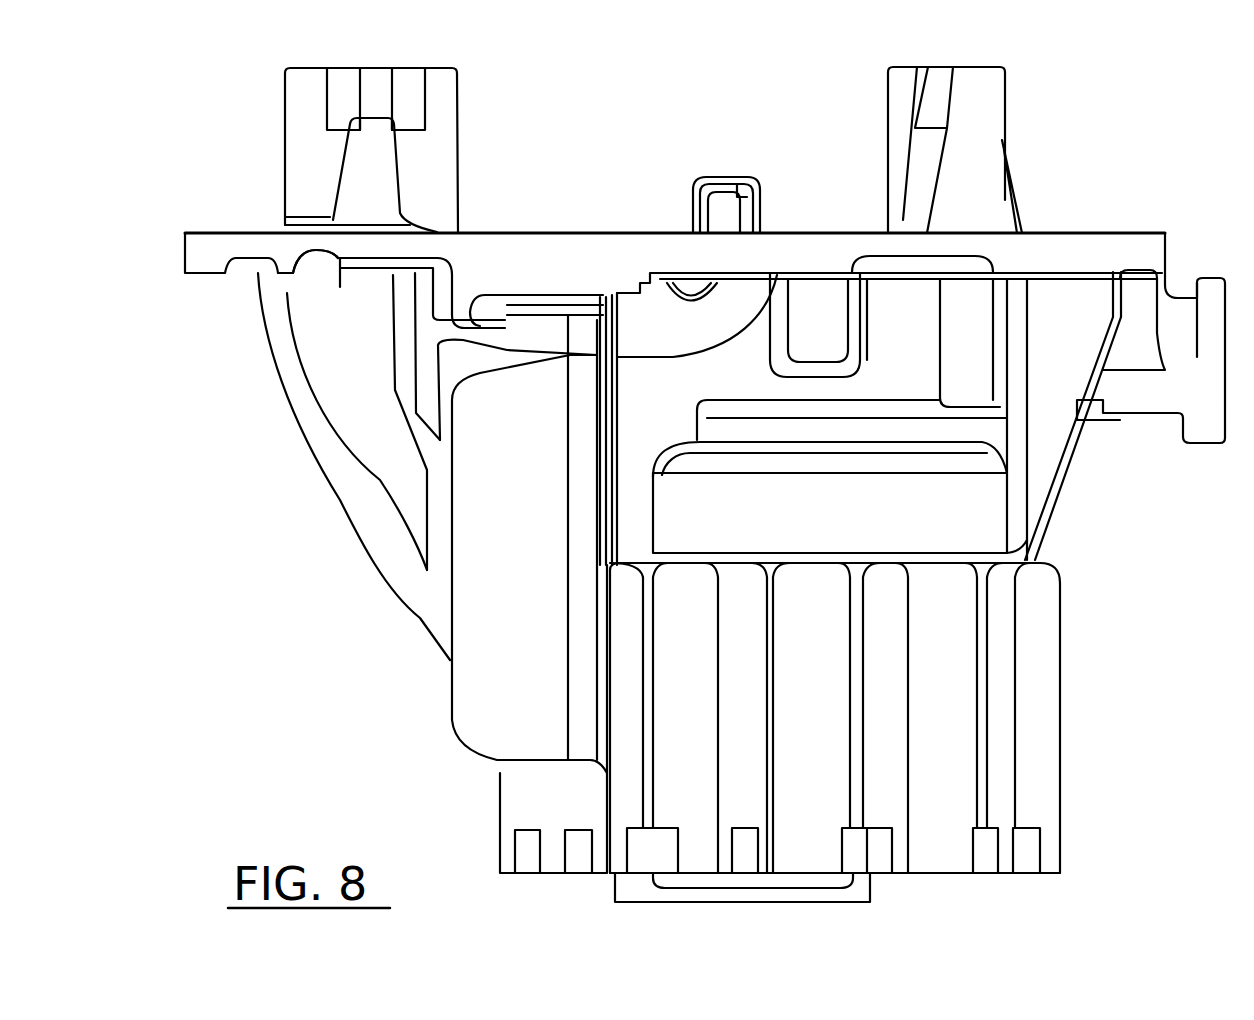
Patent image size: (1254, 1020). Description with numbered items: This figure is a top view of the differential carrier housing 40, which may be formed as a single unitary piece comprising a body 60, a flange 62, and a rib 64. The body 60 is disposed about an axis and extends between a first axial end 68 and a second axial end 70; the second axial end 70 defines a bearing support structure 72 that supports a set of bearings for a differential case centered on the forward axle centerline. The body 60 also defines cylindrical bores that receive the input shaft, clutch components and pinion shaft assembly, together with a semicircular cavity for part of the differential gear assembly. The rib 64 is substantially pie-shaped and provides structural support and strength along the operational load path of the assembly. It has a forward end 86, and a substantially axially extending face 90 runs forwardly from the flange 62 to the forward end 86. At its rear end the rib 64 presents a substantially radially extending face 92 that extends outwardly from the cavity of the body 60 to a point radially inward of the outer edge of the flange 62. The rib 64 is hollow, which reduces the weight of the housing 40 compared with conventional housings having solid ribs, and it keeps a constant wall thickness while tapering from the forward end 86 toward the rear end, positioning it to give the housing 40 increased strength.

The differential carrier housing 40 is at (955, 64).
The body 60 is at (1043, 672).
The flange 62 is at (200, 250).
The rib 64 is at (340, 518).
The first axial end 68 is at (1020, 877).
The second axial end 70 is at (576, 236).
The bearing support structure 72 is at (443, 80).
The forward end 86 is at (420, 618).
The axially extending face 90 is at (387, 330).
The radially extending face 92 is at (300, 262).